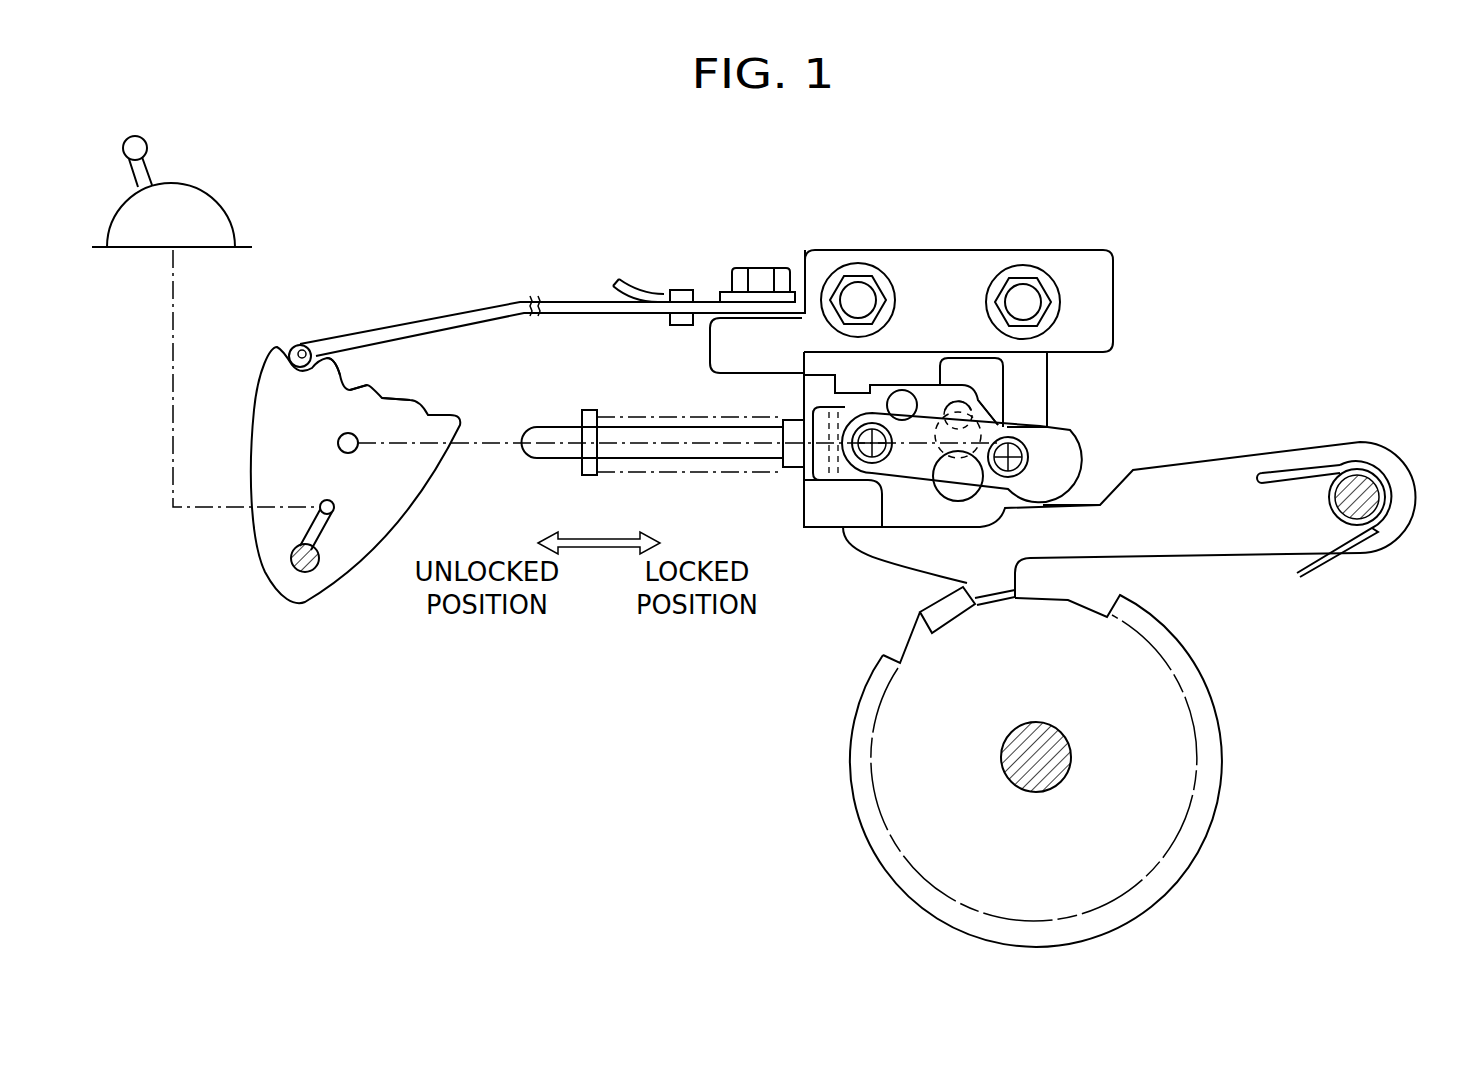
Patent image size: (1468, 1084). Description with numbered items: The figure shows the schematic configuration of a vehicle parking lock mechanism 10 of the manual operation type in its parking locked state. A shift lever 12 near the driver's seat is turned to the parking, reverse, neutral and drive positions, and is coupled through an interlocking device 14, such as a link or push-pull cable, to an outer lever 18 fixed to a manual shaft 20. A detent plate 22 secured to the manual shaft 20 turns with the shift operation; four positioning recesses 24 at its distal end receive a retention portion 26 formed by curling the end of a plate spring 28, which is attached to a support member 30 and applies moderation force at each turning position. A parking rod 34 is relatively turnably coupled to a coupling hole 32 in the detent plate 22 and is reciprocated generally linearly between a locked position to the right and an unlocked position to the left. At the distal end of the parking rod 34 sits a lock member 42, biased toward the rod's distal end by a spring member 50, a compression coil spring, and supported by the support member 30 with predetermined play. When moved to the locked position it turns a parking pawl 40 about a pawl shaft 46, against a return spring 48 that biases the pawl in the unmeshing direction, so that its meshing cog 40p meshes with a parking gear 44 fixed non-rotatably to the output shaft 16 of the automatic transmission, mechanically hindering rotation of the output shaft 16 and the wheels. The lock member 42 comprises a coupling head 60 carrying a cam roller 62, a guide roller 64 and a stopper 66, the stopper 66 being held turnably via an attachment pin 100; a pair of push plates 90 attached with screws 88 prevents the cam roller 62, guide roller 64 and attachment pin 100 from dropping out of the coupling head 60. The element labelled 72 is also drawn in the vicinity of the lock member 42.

The vehicle parking lock mechanism 10 is at (1238, 290).
The shift lever 12 is at (142, 140).
The interlocking device 14 is at (173, 340).
The output shaft 16 is at (1050, 765).
The outer lever 18 is at (322, 532).
The manual shaft 20 is at (299, 573).
The detent plate 22 is at (262, 458).
The positioning recesses 24 is at (345, 390).
The retention portion 26 is at (300, 345).
The plate spring 28 is at (568, 302).
The support member 30 is at (1070, 287).
The coupling hole 32 is at (353, 455).
The parking rod 34 is at (560, 440).
The parking pawl 40 is at (1200, 535).
The meshing cog 40p is at (930, 620).
The lock member 42 is at (1088, 424).
The parking gear 44 is at (878, 840).
The pawl shaft 46 is at (1365, 480).
The return spring 48 is at (1298, 468).
The spring member 50 is at (777, 460).
The coupling head 60 is at (850, 496).
The cam roller 62 is at (943, 490).
The guide roller 64 is at (897, 403).
The stopper 66 is at (960, 373).
The spring 72 is at (807, 453).
The screws 88 is at (853, 416).
The push plates 90 is at (921, 442).
The attachment pin 100 is at (975, 410).